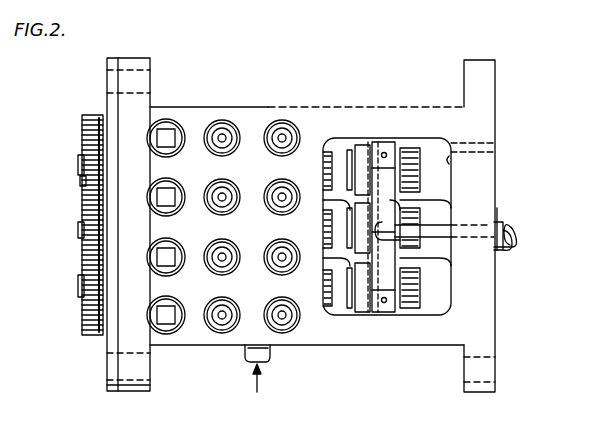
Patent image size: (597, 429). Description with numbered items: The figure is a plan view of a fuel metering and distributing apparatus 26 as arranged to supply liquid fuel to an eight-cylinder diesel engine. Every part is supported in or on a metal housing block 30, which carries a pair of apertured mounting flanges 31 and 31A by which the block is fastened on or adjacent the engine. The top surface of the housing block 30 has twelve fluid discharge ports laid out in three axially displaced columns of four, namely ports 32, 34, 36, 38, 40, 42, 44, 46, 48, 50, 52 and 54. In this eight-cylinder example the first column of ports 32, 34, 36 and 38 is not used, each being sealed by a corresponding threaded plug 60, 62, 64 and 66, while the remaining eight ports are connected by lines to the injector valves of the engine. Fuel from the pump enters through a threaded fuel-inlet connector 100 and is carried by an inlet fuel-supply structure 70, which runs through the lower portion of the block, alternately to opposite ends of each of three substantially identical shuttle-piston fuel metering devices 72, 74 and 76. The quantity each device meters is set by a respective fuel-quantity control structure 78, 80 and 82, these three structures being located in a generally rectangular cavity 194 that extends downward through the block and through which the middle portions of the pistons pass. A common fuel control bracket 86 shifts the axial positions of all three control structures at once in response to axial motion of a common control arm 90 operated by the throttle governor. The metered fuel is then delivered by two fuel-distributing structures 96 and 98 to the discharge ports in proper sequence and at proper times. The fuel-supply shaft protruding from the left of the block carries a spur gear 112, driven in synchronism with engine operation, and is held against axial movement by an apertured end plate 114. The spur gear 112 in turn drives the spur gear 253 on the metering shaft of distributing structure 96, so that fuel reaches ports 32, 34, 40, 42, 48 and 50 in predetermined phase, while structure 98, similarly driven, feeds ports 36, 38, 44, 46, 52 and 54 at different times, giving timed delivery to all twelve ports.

The fuel metering and distributing apparatus 26 is at (438, 350).
The housing block 30 is at (284, 107).
The mounting flange 31 is at (138, 62).
The mounting flange 31A is at (483, 62).
The fluid discharge port 32 is at (166, 119).
The fluid discharge port 34 is at (158, 180).
The fluid discharge port 36 is at (156, 246).
The fluid discharge port 38 is at (156, 304).
The fluid discharge port 40 is at (226, 122).
The fluid discharge port 42 is at (216, 186).
The fluid discharge port 44 is at (228, 246).
The fluid discharge port 46 is at (226, 304).
The fluid discharge port 48 is at (292, 128).
The fluid discharge port 50 is at (272, 186).
The fluid discharge port 52 is at (286, 268).
The fluid discharge port 54 is at (283, 330).
The threaded plug 60 is at (175, 130).
The threaded plug 62 is at (172, 205).
The threaded plug 64 is at (172, 266).
The threaded plug 66 is at (170, 324).
The inlet fuel-supply structure 70 is at (77, 216).
The shuttle-piston fuel metering device 72 is at (340, 160).
The shuttle-piston fuel metering device 74 is at (322, 232).
The shuttle-piston fuel metering device 76 is at (338, 296).
The fuel-quantity control structure 78 is at (383, 147).
The fuel-quantity control structure 80 is at (486, 213).
The fuel-quantity control structure 82 is at (402, 320).
The fuel control bracket 86 is at (384, 282).
The control arm 90 is at (506, 250).
The fuel-distributing structure 96 is at (78, 162).
The fuel-distributing structure 98 is at (78, 284).
The fuel-inlet connector 100 is at (246, 360).
The spur gear 112 is at (78, 229).
The end plate 114 is at (108, 389).
The cavity 194 is at (452, 148).
The spur gear 253 is at (90, 117).